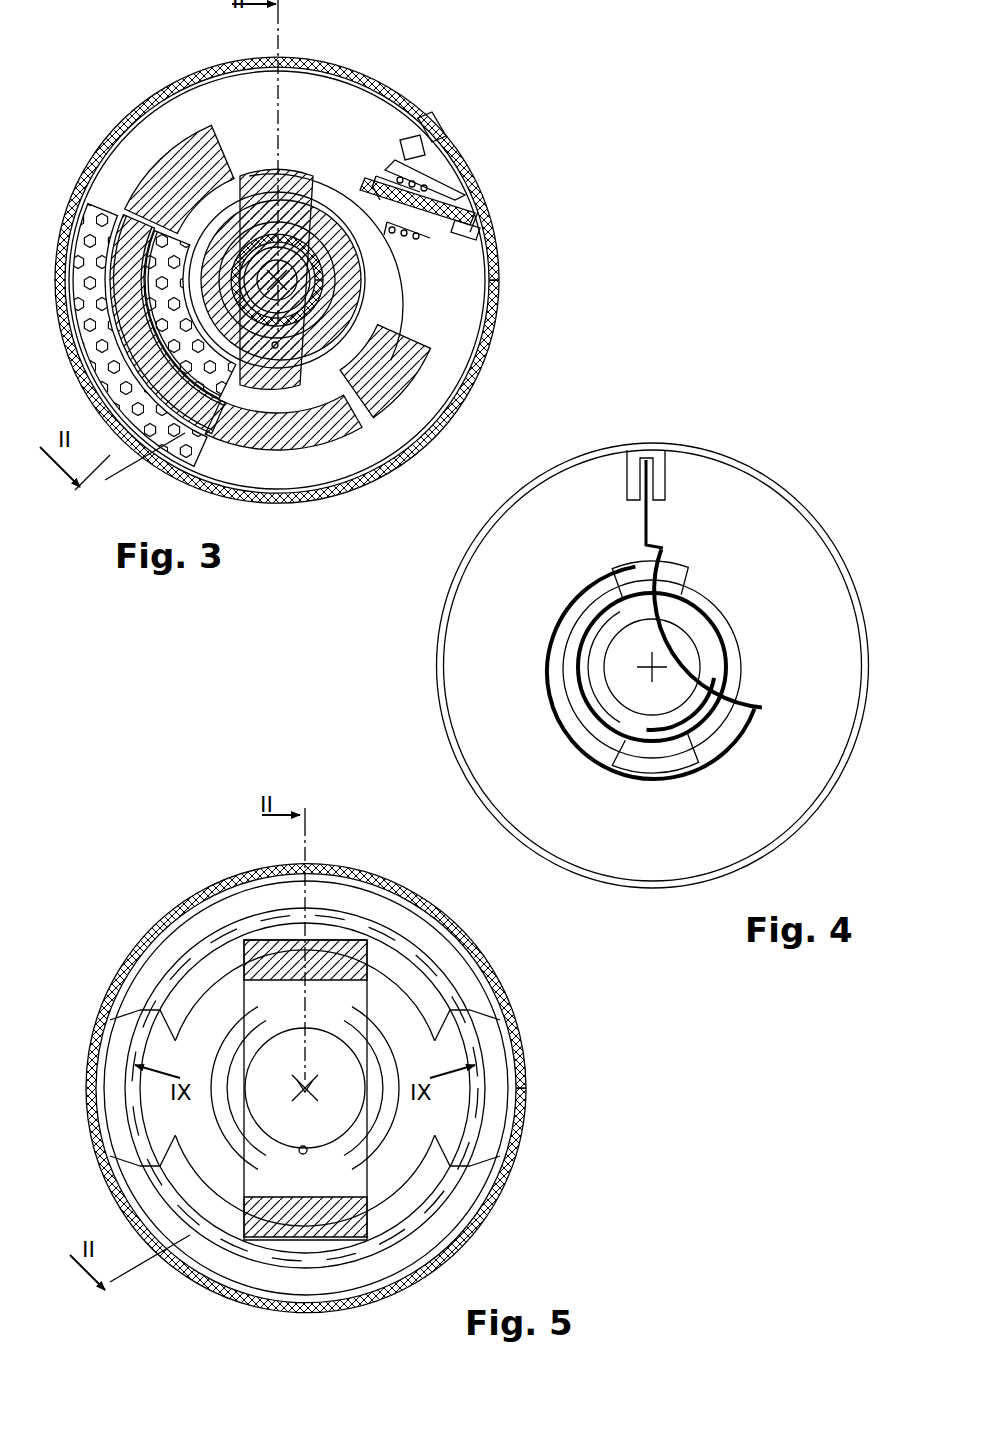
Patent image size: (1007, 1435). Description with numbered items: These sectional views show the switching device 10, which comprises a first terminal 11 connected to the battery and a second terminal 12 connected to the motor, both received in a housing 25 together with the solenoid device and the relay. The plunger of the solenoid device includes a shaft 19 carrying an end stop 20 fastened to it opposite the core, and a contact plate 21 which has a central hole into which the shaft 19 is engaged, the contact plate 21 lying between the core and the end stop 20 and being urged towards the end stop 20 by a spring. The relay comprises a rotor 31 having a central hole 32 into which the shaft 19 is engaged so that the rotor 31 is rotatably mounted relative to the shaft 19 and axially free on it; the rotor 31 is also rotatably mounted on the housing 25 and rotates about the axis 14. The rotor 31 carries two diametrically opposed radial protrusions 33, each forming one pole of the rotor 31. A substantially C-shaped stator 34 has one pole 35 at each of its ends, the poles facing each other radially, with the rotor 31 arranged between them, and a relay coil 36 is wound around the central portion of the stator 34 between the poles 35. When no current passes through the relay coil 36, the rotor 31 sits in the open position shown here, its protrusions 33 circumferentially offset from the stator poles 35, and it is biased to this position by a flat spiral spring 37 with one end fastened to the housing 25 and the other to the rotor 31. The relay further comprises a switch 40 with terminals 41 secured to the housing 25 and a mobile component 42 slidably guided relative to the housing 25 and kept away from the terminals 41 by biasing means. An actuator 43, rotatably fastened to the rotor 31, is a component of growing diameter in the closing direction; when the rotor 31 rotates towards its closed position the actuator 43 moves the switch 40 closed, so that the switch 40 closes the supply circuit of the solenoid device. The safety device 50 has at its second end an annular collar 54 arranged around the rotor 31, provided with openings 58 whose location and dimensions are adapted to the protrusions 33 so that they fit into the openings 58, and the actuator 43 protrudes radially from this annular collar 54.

In FIG. 3, the switching device 10 is at (524, 114).
In FIG. 4, the switching device 10 is at (862, 808).
In FIG. 5, the switching device 10 is at (555, 1160).
In FIG. 5, the first terminal 11 is at (330, 950).
In FIG. 5, the second terminal 12 is at (334, 1228).
In FIG. 3, the axis 14 is at (340, 172).
In FIG. 4, the axis 14 is at (652, 668).
In FIG. 5, the axis 14 is at (345, 1095).
In FIG. 3, the shaft 19 is at (470, 345).
In FIG. 5, the end stop 20 is at (278, 1165).
In FIG. 5, the contact plate 21 is at (400, 980).
In FIG. 3, the housing 25 is at (78, 178).
In FIG. 4, the housing 25 is at (850, 590).
In FIG. 5, the housing 25 is at (178, 912).
In FIG. 3, the rotor 31 is at (418, 448).
In FIG. 4, the rotor 31 is at (603, 710).
In FIG. 3, the central hole 32 is at (383, 490).
In FIG. 4, the central hole 32 is at (623, 677).
In FIG. 3, the radial protrusion 33 is at (298, 176).
In FIG. 4, the radial protrusion 33 is at (677, 570).
In FIG. 3, the stator 34 is at (150, 158).
In FIG. 3, the pole 35 is at (192, 172).
In FIG. 3, the relay coil 36 is at (68, 388).
In FIG. 4, the flat spiral spring 37 is at (740, 582).
In FIG. 3, the switch 40 is at (385, 150).
In FIG. 3, the terminals 41 is at (432, 140).
In FIG. 3, the mobile component 42 is at (440, 197).
In FIG. 3, the actuator 43 is at (385, 290).
In FIG. 3, the safety device 50 is at (422, 280).
In FIG. 3, the annular collar 54 is at (165, 268).
In FIG. 3, the openings 58 is at (258, 172).